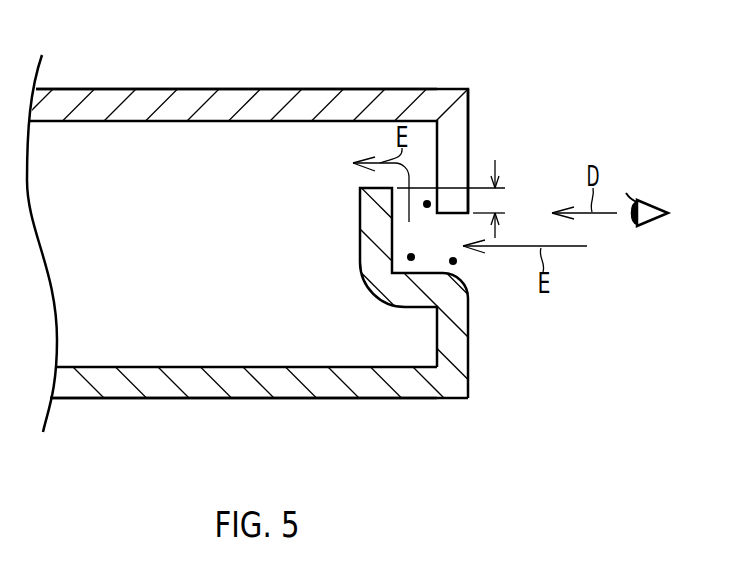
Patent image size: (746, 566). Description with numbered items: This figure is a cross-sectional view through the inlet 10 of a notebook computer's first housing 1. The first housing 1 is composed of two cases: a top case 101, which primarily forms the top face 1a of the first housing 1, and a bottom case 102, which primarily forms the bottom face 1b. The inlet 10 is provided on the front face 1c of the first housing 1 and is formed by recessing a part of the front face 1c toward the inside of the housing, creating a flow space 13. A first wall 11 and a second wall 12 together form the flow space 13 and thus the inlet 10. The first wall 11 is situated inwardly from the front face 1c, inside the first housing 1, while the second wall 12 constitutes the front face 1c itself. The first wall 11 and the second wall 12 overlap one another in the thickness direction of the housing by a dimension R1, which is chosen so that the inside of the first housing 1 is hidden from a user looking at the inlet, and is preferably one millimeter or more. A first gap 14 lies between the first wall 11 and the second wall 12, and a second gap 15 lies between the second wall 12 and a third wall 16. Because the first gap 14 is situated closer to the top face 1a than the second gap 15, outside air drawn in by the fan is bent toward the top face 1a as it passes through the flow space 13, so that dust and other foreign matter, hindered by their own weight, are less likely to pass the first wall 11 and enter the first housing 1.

The first housing 1 is at (300, 88).
The top face 1a is at (176, 88).
The bottom face 1b is at (181, 399).
The front face 1c is at (469, 115).
The top case 101 is at (107, 100).
The bottom case 102 is at (277, 383).
The inlet 10 is at (484, 286).
The first wall 11 is at (373, 222).
The second wall 12 is at (460, 148).
The flow space 13 is at (411, 257).
The first gap 14 is at (427, 200).
The second gap 15 is at (458, 263).
The third wall 16 is at (452, 343).
The overlapping dimension R1 is at (497, 200).